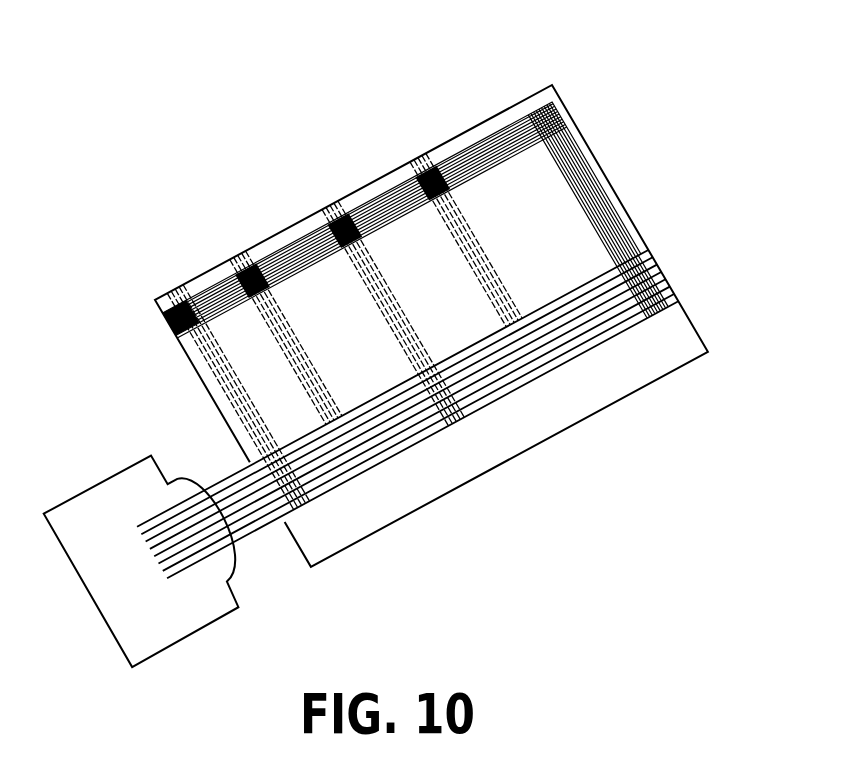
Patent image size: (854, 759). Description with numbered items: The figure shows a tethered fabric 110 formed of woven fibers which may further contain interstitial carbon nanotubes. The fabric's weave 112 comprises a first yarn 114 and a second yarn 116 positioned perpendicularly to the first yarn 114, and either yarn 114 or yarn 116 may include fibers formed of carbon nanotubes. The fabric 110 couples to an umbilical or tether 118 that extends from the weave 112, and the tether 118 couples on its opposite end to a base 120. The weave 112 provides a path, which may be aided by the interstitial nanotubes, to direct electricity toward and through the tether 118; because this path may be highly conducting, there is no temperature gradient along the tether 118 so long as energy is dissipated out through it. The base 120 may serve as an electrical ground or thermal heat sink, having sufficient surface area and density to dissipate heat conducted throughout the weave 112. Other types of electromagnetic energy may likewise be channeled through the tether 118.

The tethered fabric 110 is at (197, 157).
The weave 112 is at (515, 122).
The first yarn 114 is at (380, 250).
The second yarn 116 is at (305, 335).
The tether 118 is at (251, 545).
The base 120 is at (98, 484).